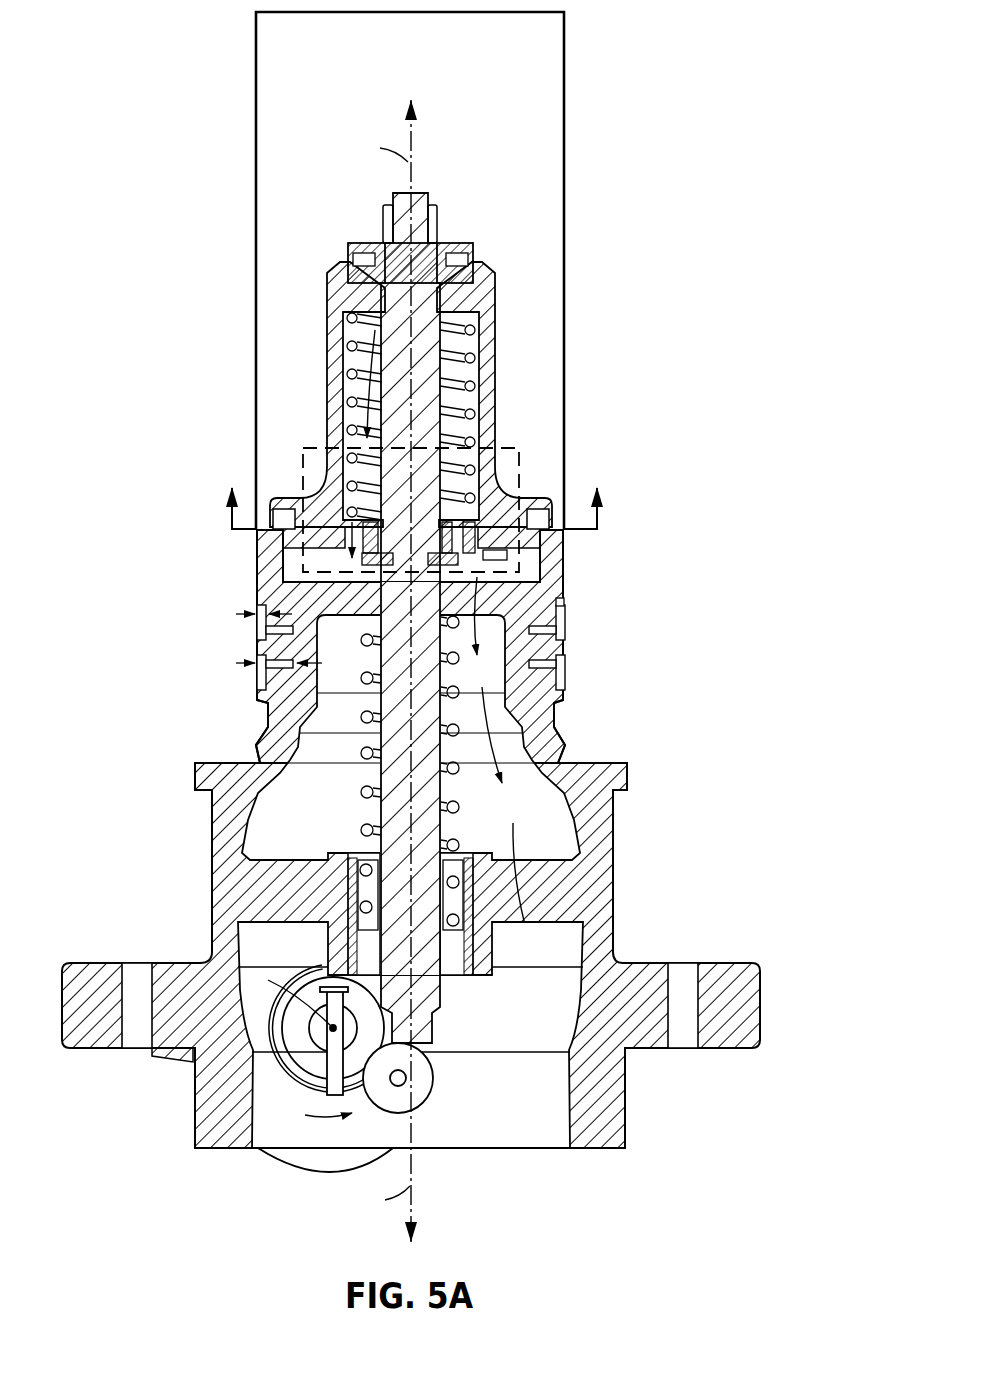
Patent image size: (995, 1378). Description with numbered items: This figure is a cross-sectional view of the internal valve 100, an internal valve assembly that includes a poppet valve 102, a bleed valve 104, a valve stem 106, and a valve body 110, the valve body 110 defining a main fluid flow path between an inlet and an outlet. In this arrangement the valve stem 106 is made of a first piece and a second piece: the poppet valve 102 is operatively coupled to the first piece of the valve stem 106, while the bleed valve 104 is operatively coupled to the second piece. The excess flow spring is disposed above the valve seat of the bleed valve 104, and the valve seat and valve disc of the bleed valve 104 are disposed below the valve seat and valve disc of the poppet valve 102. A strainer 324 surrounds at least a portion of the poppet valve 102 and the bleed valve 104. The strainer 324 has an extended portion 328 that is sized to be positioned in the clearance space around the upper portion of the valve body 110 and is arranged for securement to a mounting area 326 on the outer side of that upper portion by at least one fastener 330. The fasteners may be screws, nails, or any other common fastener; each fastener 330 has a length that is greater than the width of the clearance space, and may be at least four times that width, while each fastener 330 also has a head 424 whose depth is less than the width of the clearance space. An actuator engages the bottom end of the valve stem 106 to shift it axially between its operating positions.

The internal valve 100 is at (411, 627).
The poppet valve 102 is at (490, 517).
The bleed valve 104 is at (458, 245).
The valve stem 106 is at (418, 212).
The valve body 110 is at (411, 888).
The strainer 324 is at (540, 89).
The mounting area 326 is at (458, 635).
The extended portion 328 is at (565, 615).
The fastener 330 is at (562, 603).
The head 424 is at (562, 632).